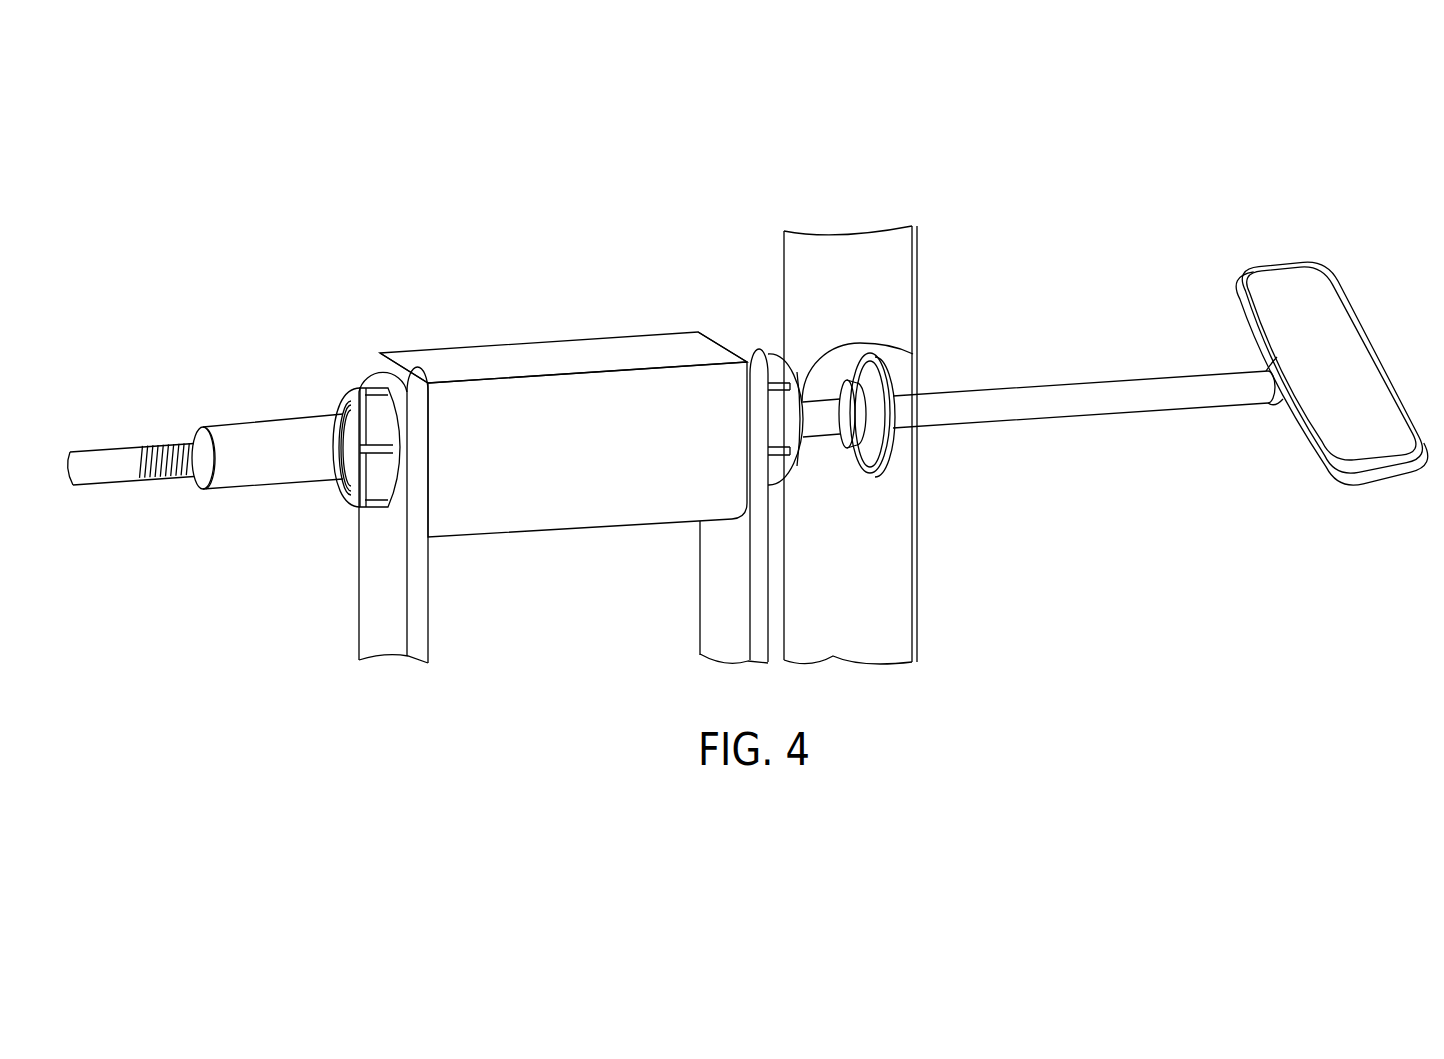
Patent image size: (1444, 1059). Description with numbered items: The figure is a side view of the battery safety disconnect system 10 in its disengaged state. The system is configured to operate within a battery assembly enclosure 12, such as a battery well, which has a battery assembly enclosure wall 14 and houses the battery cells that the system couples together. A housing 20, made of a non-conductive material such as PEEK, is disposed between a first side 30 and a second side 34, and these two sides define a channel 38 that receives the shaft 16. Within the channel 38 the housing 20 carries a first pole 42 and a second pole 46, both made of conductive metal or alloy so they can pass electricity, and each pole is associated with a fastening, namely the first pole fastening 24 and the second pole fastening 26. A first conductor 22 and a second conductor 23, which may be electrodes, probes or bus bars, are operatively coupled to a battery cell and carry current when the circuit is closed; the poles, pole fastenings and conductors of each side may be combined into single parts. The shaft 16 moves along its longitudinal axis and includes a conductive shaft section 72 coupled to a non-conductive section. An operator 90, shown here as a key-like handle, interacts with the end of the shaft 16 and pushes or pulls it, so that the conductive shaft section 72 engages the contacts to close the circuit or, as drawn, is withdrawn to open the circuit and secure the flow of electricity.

The battery safety disconnect system 10 is at (230, 262).
The battery assembly enclosure 12 is at (645, 227).
The battery assembly enclosure wall 14 is at (913, 252).
The shaft 16 is at (113, 472).
The housing 20 is at (537, 352).
The first conductor 22 is at (710, 585).
The second conductor 23 is at (373, 613).
The first pole fastening 24 is at (772, 353).
The second pole fastening 26 is at (354, 388).
The first side 30 is at (715, 337).
The second side 34 is at (377, 357).
The channel 38 is at (298, 400).
The first pole 42 is at (905, 352).
The second pole 46 is at (332, 485).
The conductive shaft section 72 is at (252, 468).
The operator 90 is at (1313, 280).